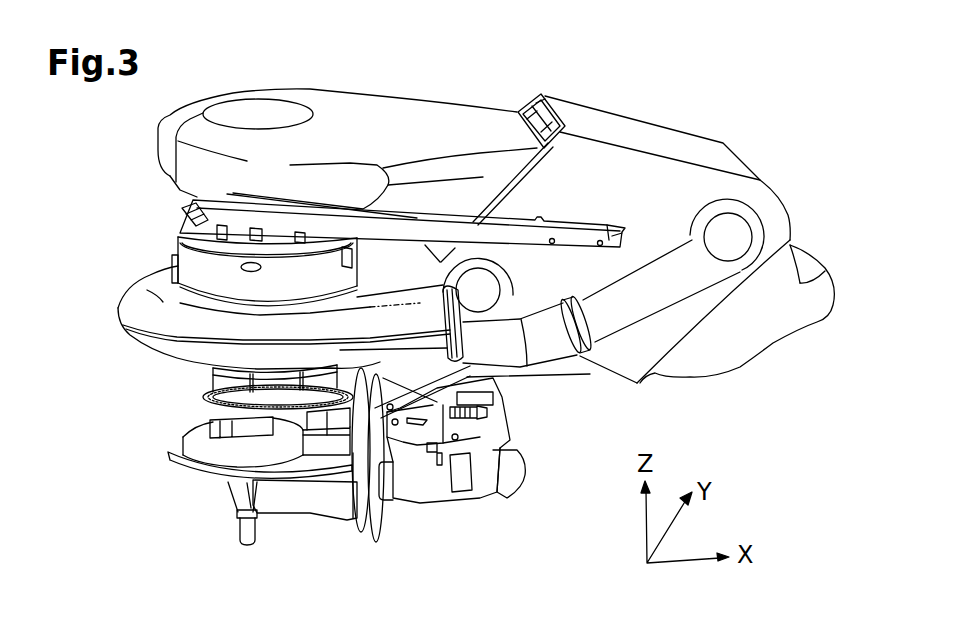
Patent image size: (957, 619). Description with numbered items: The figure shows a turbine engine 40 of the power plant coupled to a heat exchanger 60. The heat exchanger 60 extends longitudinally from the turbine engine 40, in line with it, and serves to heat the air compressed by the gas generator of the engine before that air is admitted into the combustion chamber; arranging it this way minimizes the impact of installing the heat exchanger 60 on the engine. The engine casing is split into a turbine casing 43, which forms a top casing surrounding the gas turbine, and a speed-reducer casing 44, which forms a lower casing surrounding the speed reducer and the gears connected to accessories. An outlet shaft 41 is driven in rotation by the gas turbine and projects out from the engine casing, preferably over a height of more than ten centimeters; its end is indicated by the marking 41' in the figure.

The heat exchanger 60 is at (613, 124).
The turbine casing 43 is at (193, 268).
The speed-reducer casing 44 is at (197, 433).
The turbine engine 40 is at (183, 492).
The outlet shaft 41 is at (226, 530).
The drain pipe outlet 41' is at (271, 559).